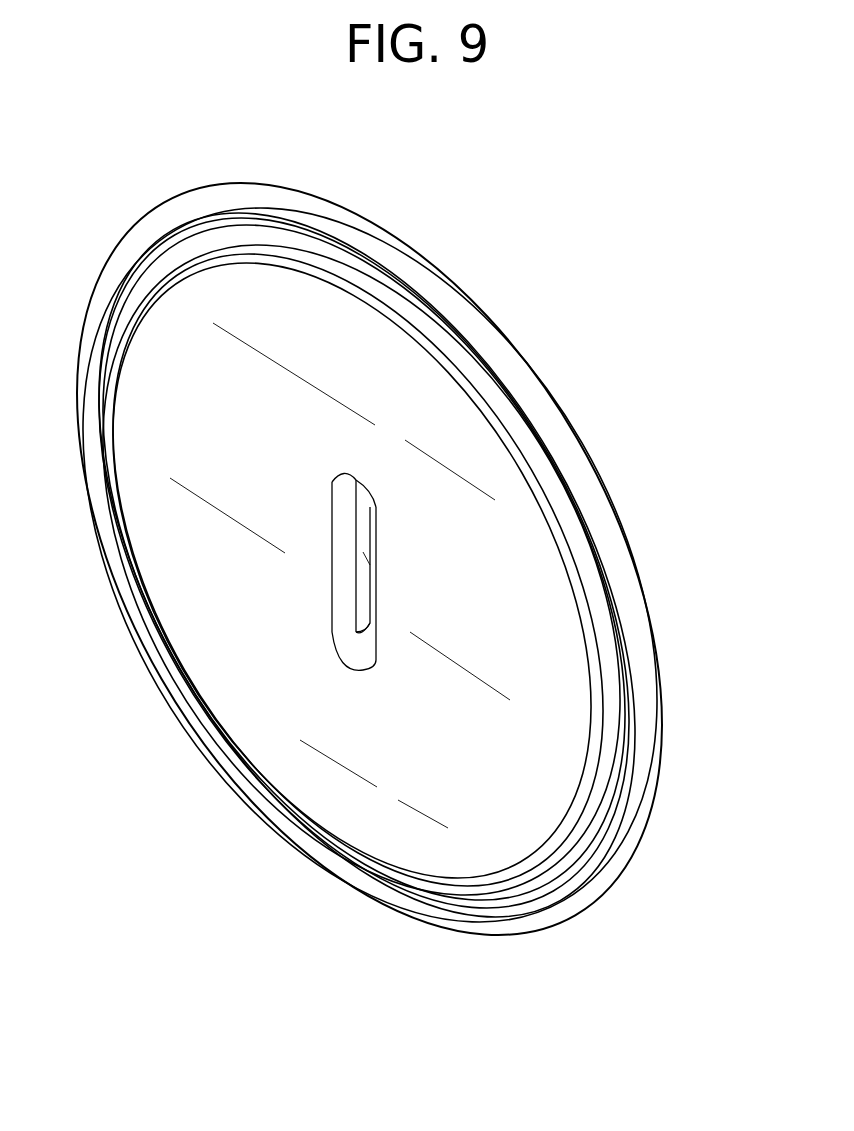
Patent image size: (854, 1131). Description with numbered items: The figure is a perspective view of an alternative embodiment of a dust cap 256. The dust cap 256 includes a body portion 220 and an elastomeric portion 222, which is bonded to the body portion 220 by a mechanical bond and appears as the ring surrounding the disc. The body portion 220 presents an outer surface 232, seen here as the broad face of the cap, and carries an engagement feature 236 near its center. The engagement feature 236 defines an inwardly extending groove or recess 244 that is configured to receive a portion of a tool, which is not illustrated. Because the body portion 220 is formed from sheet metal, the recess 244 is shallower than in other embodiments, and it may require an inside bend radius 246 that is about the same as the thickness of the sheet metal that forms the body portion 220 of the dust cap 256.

The dust cap 256 is at (452, 186).
The elastomeric portion 222 is at (492, 338).
The outer surface 232 is at (573, 708).
The body portion 220 is at (365, 553).
The engagement feature 236 is at (332, 498).
The inside bend radius 246 is at (332, 577).
The recess 244 is at (365, 598).